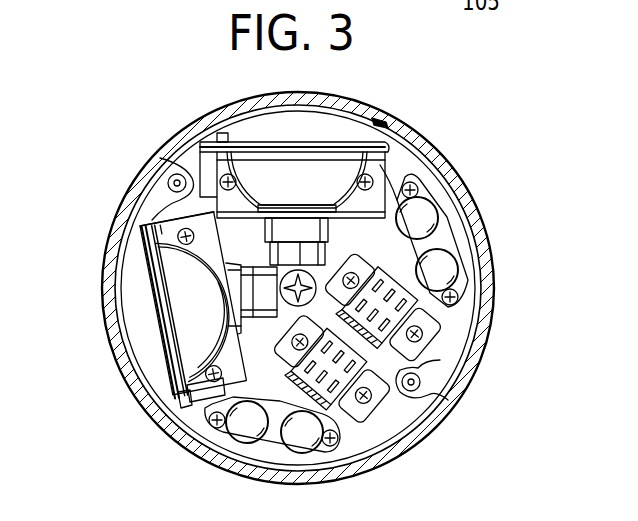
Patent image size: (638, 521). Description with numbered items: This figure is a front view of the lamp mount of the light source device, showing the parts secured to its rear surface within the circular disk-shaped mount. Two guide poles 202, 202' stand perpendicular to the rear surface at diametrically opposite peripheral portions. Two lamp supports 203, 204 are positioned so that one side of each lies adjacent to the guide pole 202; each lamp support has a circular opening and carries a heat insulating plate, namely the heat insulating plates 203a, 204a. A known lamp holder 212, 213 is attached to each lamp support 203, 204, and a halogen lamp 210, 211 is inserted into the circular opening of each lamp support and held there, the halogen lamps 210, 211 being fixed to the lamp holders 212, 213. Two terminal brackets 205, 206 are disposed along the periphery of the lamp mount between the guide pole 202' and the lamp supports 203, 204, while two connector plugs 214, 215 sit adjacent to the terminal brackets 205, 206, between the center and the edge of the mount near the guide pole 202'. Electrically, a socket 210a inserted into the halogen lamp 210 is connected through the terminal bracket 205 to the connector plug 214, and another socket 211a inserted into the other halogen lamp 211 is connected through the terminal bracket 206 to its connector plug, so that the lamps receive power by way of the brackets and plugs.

The guide pole 202 is at (156, 163).
The guide pole 202' is at (461, 393).
The lamp support 203 is at (186, 405).
The heat insulating plate 203a is at (162, 224).
The lamp support 204 is at (243, 147).
The heat insulating plate 204a is at (430, 166).
The terminal bracket 205 is at (277, 447).
The terminal bracket 206 is at (478, 235).
The halogen lamp 210 is at (182, 335).
The socket 210a is at (257, 290).
The halogen lamp 211 is at (338, 160).
The socket 211a is at (287, 253).
The lamp holder 212 is at (153, 357).
The lamp holder 213 is at (315, 140).
The connector plug 214 is at (381, 398).
The connector plug 215 is at (423, 322).